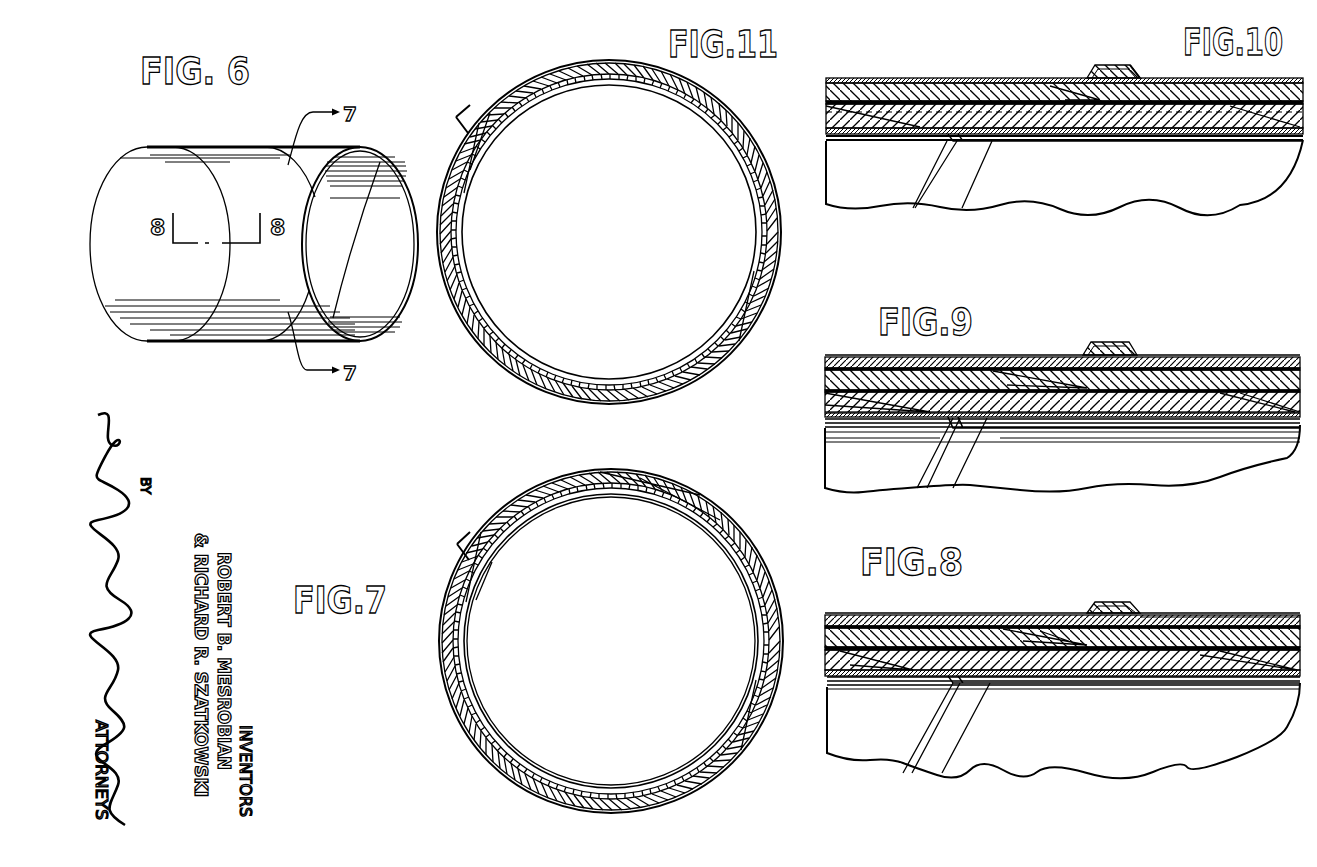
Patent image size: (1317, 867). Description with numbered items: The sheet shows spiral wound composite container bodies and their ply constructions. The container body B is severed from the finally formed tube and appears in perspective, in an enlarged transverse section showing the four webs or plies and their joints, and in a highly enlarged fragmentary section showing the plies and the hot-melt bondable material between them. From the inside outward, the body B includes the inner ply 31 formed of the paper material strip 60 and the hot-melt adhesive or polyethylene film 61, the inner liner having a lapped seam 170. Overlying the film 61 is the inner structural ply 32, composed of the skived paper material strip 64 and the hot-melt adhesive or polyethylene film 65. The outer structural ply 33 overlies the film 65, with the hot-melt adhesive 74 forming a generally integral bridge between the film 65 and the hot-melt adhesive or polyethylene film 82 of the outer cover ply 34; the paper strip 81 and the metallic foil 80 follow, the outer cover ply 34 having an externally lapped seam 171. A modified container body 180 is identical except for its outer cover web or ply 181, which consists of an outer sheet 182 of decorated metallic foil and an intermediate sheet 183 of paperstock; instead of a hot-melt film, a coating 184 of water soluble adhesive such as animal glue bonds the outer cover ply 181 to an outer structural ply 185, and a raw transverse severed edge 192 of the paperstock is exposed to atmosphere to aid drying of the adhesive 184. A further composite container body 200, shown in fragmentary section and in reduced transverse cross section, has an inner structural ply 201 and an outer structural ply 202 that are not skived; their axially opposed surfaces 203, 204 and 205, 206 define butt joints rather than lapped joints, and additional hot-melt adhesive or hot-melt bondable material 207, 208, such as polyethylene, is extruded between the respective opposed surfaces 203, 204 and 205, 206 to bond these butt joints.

In FIG. 6, the container body B is at (246, 348).
In FIG. 7, the container body B is at (783, 603).
In FIG. 8, the container body B is at (873, 610).
In FIG. 7, the inner ply 31 is at (690, 525).
In FIG. 8, the inner ply 31 is at (846, 742).
In FIG. 7, the inner structural ply 32 is at (472, 693).
In FIG. 8, the inner structural ply 32 is at (1055, 655).
In FIG. 7, the outer structural ply 33 is at (523, 777).
In FIG. 8, the outer structural ply 33 is at (1183, 633).
In FIG. 7, the outer cover ply 34 is at (740, 750).
In FIG. 8, the outer cover ply 34 is at (1253, 611).
In FIG. 8, the paper material strip 60 is at (1235, 727).
In FIG. 8, the hot-melt adhesive or polyethylene film 61 is at (1157, 670).
In FIG. 8, the skived paper material strip 64 is at (1008, 663).
In FIG. 8, the hot-melt adhesive or polyethylene film 65 is at (1183, 663).
In FIG. 8, the hot-melt adhesive 74 is at (1053, 637).
In FIG. 8, the metallic foil 80 is at (1157, 615).
In FIG. 8, the paper strip 81 is at (1225, 615).
In FIG. 8, the hot-melt adhesive or polyethylene film 82 is at (963, 627).
In FIG. 7, the lapped seam 170 is at (492, 562).
In FIG. 8, the lapped seam 170 is at (955, 722).
In FIG. 7, the externally lapped seam 171 is at (462, 544).
In FIG. 8, the externally lapped seam 171 is at (1110, 595).
In FIG. 9, the container body 180 is at (1195, 332).
In FIG. 9, the outer cover web or ply 181 is at (1062, 342).
In FIG. 9, the outer sheet of metallic foil 182 is at (1205, 358).
In FIG. 9, the intermediate sheet of paperstock material 183 is at (1153, 367).
In FIG. 9, the coating of water soluble adhesive 184 is at (1272, 357).
In FIG. 9, the outer structural ply 185 is at (992, 373).
In FIG. 9, the raw transverse severed edge 192 is at (1085, 346).
In FIG. 11, the composite container body 200 is at (780, 273).
In FIG. 10, the composite container body 200 is at (1057, 195).
In FIG. 11, the inner structural ply 201 is at (727, 137).
In FIG. 10, the inner structural ply 201 is at (1102, 122).
In FIG. 11, the outer structural ply 202 is at (720, 110).
In FIG. 10, the outer structural ply 202 is at (1230, 102).
In FIG. 10, the axially opposed surface 203 is at (888, 141).
In FIG. 10, the axially opposed surface 204 is at (875, 97).
In FIG. 10, the axially opposed surface 205 is at (1083, 72).
In FIG. 10, the axially opposed surface 206 is at (1080, 97).
In FIG. 10, the hot-melt adhesive or hot-melt bondable material 207 is at (866, 118).
In FIG. 10, the hot-melt adhesive or hot-melt bondable material 208 is at (1124, 91).